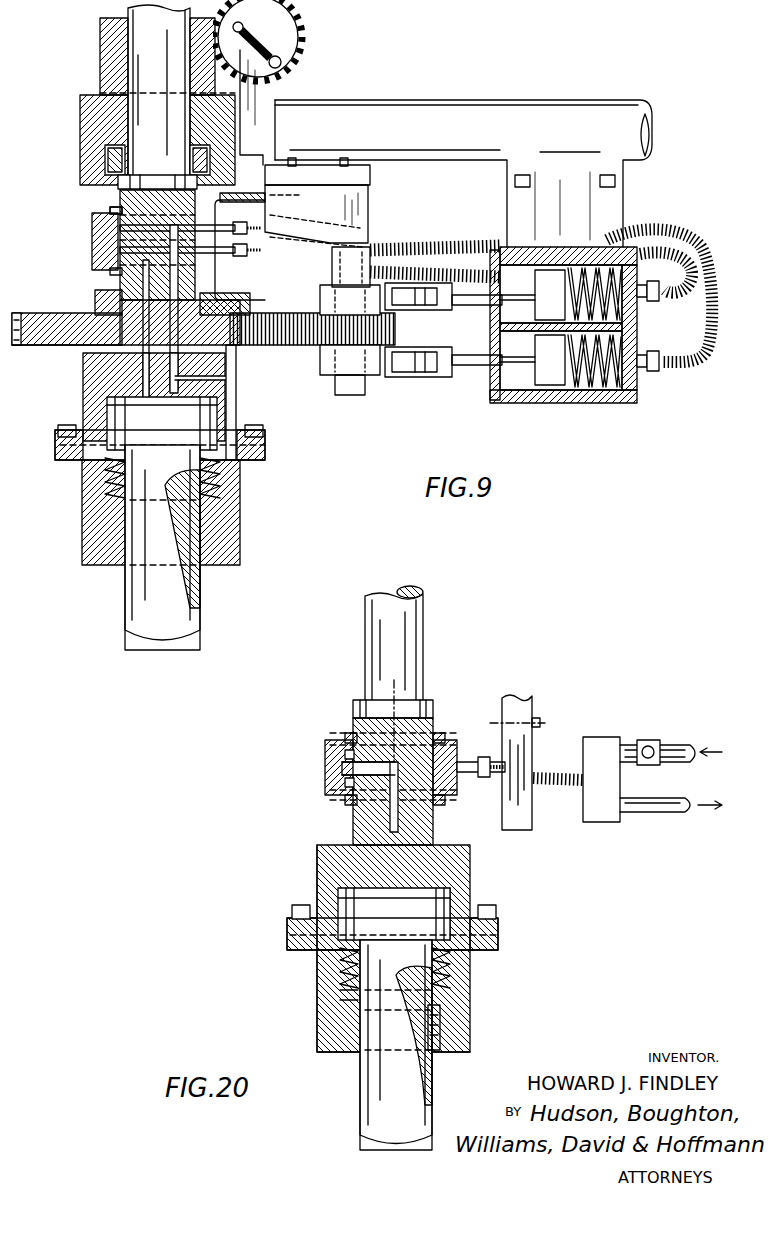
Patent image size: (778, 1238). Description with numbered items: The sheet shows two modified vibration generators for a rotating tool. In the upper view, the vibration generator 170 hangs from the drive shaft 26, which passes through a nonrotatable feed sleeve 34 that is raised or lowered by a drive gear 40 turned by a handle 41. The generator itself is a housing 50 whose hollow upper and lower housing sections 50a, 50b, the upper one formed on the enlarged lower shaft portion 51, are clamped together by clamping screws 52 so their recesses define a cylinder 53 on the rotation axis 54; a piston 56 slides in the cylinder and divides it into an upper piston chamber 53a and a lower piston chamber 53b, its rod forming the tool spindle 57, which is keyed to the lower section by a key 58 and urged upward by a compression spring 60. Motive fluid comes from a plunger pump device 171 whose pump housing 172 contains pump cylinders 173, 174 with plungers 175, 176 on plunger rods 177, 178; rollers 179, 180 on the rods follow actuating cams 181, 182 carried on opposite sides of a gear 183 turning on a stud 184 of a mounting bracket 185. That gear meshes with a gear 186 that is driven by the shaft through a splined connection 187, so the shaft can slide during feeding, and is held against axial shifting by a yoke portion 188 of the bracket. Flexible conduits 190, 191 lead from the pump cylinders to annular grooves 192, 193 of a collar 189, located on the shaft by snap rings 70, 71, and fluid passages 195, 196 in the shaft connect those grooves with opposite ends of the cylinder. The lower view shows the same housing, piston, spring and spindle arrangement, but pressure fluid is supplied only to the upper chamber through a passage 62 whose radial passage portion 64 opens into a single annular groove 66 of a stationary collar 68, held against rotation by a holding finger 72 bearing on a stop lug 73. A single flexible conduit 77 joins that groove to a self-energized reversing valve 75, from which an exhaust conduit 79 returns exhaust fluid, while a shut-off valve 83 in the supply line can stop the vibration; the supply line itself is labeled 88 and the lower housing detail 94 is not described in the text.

In FIG. 9, the drive shaft 26 is at (128, 38).
In FIG. 20, the drive shaft 26 is at (365, 634).
In FIG. 9, the feed sleeve 34 is at (100, 70).
In FIG. 9, the drive gear 40 is at (298, 62).
In FIG. 9, the handle 41 is at (258, 32).
In FIG. 9, the housing 50 is at (95, 420).
In FIG. 20, the housing 50 is at (470, 862).
In FIG. 20, the upper housing section 50a is at (316, 888).
In FIG. 20, the lower housing section 50b is at (316, 972).
In FIG. 20, the lower shaft portion 51 is at (352, 830).
In FIG. 20, the clamping screws 52 is at (490, 925).
In FIG. 9, the cylinder 53 is at (236, 392).
In FIG. 20, the upper piston chamber 53a is at (452, 892).
In FIG. 20, the lower piston chamber 53b is at (340, 992).
In FIG. 20, the rotation axis 54 is at (400, 686).
In FIG. 9, the piston 56 is at (218, 414).
In FIG. 20, the piston 56 is at (340, 912).
In FIG. 9, the tool spindle 57 is at (125, 595).
In FIG. 20, the tool spindle 57 is at (360, 1085).
In FIG. 20, the key 58 is at (470, 1030).
In FIG. 9, the compression spring 60 is at (108, 502).
In FIG. 20, the compression spring 60 is at (455, 976).
In FIG. 20, the passage 62 is at (400, 832).
In FIG. 20, the radial passage portion 64 is at (345, 772).
In FIG. 20, the annular groove 66 is at (328, 754).
In FIG. 20, the collar 68 is at (326, 772).
In FIG. 9, the snap ring 70 is at (118, 206).
In FIG. 20, the snap ring 70 is at (348, 733).
In FIG. 9, the snap ring 71 is at (110, 282).
In FIG. 20, the snap ring 71 is at (345, 803).
In FIG. 20, the holding finger 72 is at (486, 722).
In FIG. 20, the stop lug 73 is at (522, 706).
In FIG. 20, the reversing valve 75 is at (612, 716).
In FIG. 20, the flexible conduit 77 is at (565, 786).
In FIG. 20, the exhaust conduit 79 is at (655, 812).
In FIG. 20, the shut-off valve 83 is at (650, 740).
In FIG. 20, the supply line 88 is at (676, 746).
In FIG. 9, the housing 94 is at (245, 203).
In FIG. 9, the vibration generator 170 is at (82, 492).
In FIG. 9, the pump device 171 is at (510, 403).
In FIG. 9, the pump housing 172 is at (628, 403).
In FIG. 9, the pump cylinder 173 is at (562, 403).
In FIG. 9, the pump cylinder 174 is at (632, 240).
In FIG. 9, the plunger 175 is at (538, 345).
In FIG. 9, the plunger 176 is at (538, 306).
In FIG. 9, the plunger rod 177 is at (470, 366).
In FIG. 9, the plunger rod 178 is at (466, 306).
In FIG. 9, the roller 179 is at (420, 377).
In FIG. 9, the roller 180 is at (418, 310).
In FIG. 9, the actuating cam 181 is at (322, 372).
In FIG. 9, the actuating cam 182 is at (322, 300).
In FIG. 9, the gear 183 is at (396, 345).
In FIG. 9, the stud 184 is at (352, 395).
In FIG. 9, the mounting bracket 185 is at (355, 212).
In FIG. 9, the gear 186 is at (8, 340).
In FIG. 9, the splined connection 187 is at (118, 342).
In FIG. 9, the yoke portion 188 is at (232, 300).
In FIG. 9, the collar 189 is at (92, 218).
In FIG. 9, the flexible conduit 190 is at (660, 368).
In FIG. 9, the flexible conduit 191 is at (652, 300).
In FIG. 9, the annular groove 192 is at (118, 230).
In FIG. 9, the annular groove 193 is at (118, 251).
In FIG. 9, the fluid passage 195 is at (180, 322).
In FIG. 9, the fluid passage 196 is at (135, 372).